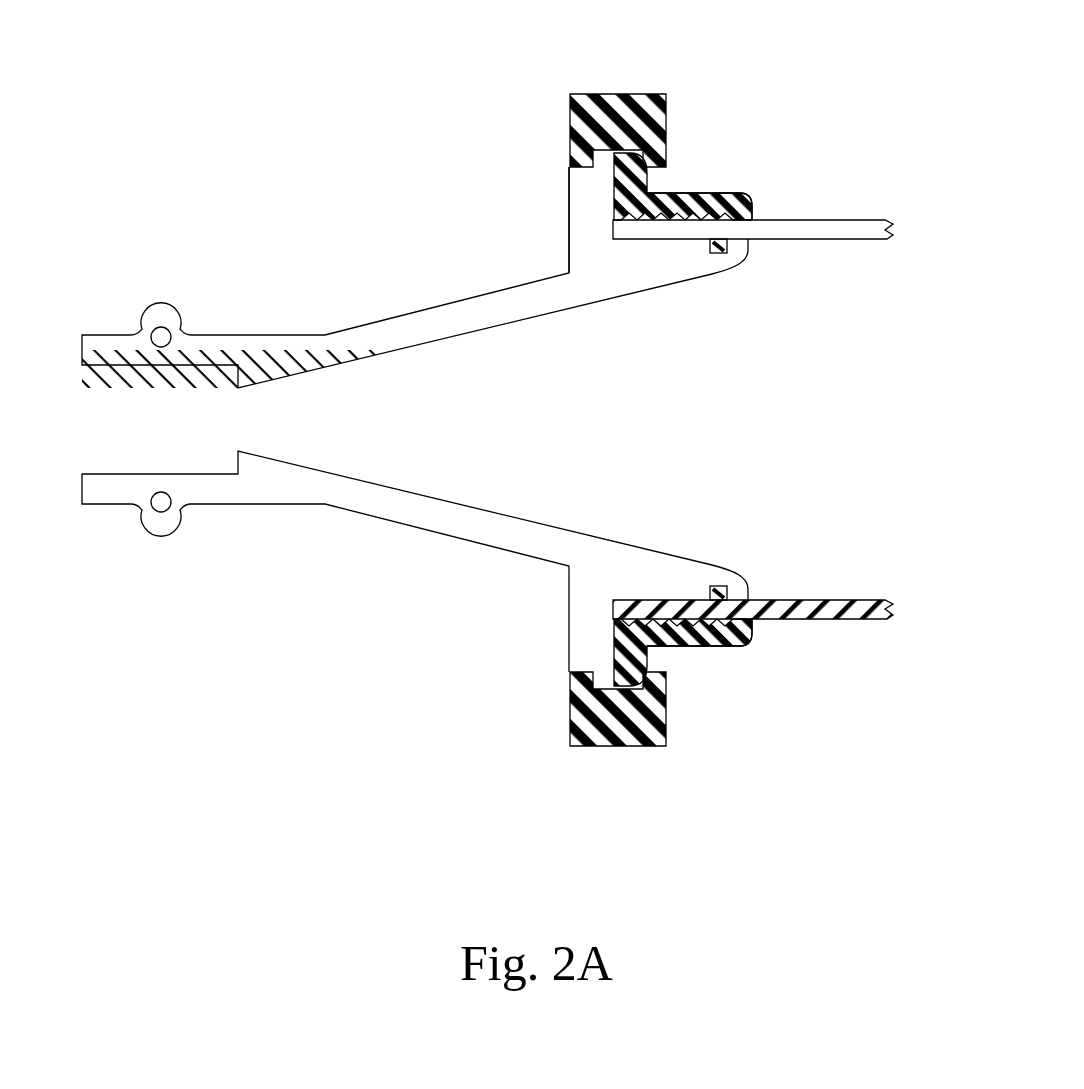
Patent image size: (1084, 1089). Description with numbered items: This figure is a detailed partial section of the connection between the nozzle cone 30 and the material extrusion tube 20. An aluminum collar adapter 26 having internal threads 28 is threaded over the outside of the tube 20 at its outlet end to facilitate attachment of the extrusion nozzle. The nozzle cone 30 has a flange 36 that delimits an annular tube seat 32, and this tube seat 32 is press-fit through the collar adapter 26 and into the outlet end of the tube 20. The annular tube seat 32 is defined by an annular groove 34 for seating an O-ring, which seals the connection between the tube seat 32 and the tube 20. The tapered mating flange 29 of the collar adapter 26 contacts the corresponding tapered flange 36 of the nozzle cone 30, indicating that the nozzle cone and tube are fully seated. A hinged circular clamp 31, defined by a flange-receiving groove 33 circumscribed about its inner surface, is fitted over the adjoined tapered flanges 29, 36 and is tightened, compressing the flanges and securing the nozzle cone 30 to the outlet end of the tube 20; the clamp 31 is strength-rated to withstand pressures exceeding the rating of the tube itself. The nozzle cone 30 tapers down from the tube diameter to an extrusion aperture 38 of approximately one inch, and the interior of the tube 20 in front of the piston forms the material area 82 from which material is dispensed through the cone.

The tube 20 is at (868, 222).
The collar adapter 26 is at (751, 197).
The internal threads 28 is at (707, 624).
The tapered mating flange 29 is at (650, 177).
The nozzle cone 30 is at (415, 419).
The hinged circular clamp 31 is at (628, 92).
The annular tube seat 32 is at (655, 600).
The flange-receiving groove 33 is at (627, 688).
The annular groove 34 is at (716, 586).
The flange 36 is at (569, 200).
The extrusion aperture 38 is at (153, 441).
The material area 82 is at (853, 450).